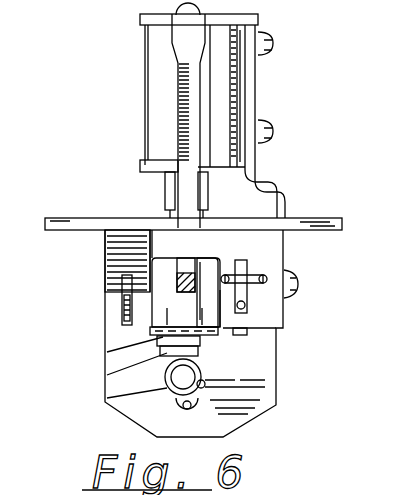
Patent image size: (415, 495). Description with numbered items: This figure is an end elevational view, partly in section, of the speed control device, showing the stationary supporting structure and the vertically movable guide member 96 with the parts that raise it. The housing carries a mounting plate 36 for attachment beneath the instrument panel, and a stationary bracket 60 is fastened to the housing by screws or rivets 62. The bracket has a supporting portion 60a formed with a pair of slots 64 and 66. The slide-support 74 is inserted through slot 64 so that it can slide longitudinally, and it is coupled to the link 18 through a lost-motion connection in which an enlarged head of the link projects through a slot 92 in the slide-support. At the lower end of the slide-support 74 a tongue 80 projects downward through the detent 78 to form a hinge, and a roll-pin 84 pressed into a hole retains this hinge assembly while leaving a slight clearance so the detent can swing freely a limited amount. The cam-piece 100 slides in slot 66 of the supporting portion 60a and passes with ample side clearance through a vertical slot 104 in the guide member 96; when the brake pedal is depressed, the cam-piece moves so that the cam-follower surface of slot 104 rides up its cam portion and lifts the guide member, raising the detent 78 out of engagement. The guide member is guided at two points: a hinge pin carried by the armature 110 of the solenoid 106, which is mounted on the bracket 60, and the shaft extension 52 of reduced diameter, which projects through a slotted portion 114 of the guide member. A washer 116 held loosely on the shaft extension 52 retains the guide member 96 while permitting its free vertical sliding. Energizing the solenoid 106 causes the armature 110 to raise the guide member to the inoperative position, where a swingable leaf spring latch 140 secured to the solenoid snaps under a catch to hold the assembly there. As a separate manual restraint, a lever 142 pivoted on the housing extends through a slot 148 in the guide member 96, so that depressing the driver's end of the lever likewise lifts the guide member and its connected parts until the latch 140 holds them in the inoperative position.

The solenoid 106 is at (140, 41).
The leaf spring latch 140 is at (185, 85).
The armature 110 is at (140, 168).
The slot 92 is at (186, 258).
The stationary bracket 60 is at (277, 186).
The mounting plate 36 is at (303, 226).
The supporting portion 60a is at (150, 240).
The slot 64 is at (148, 262).
The detent 78 is at (142, 332).
The link 18 is at (177, 280).
The manually actuated lever 142 is at (122, 282).
The slot 148 is at (128, 300).
The slide-support 74 is at (206, 262).
The roll-pin 84 is at (162, 344).
The tongue 80 is at (163, 353).
The shaft extension 52 is at (165, 390).
The slotted portion 114 is at (176, 412).
The washer 116 is at (205, 387).
The cam-piece 100 is at (244, 266).
The screws or rivets 62 is at (292, 277).
The slot 66 is at (244, 306).
The vertical slot 104 is at (242, 333).
The guide member 96 is at (262, 358).